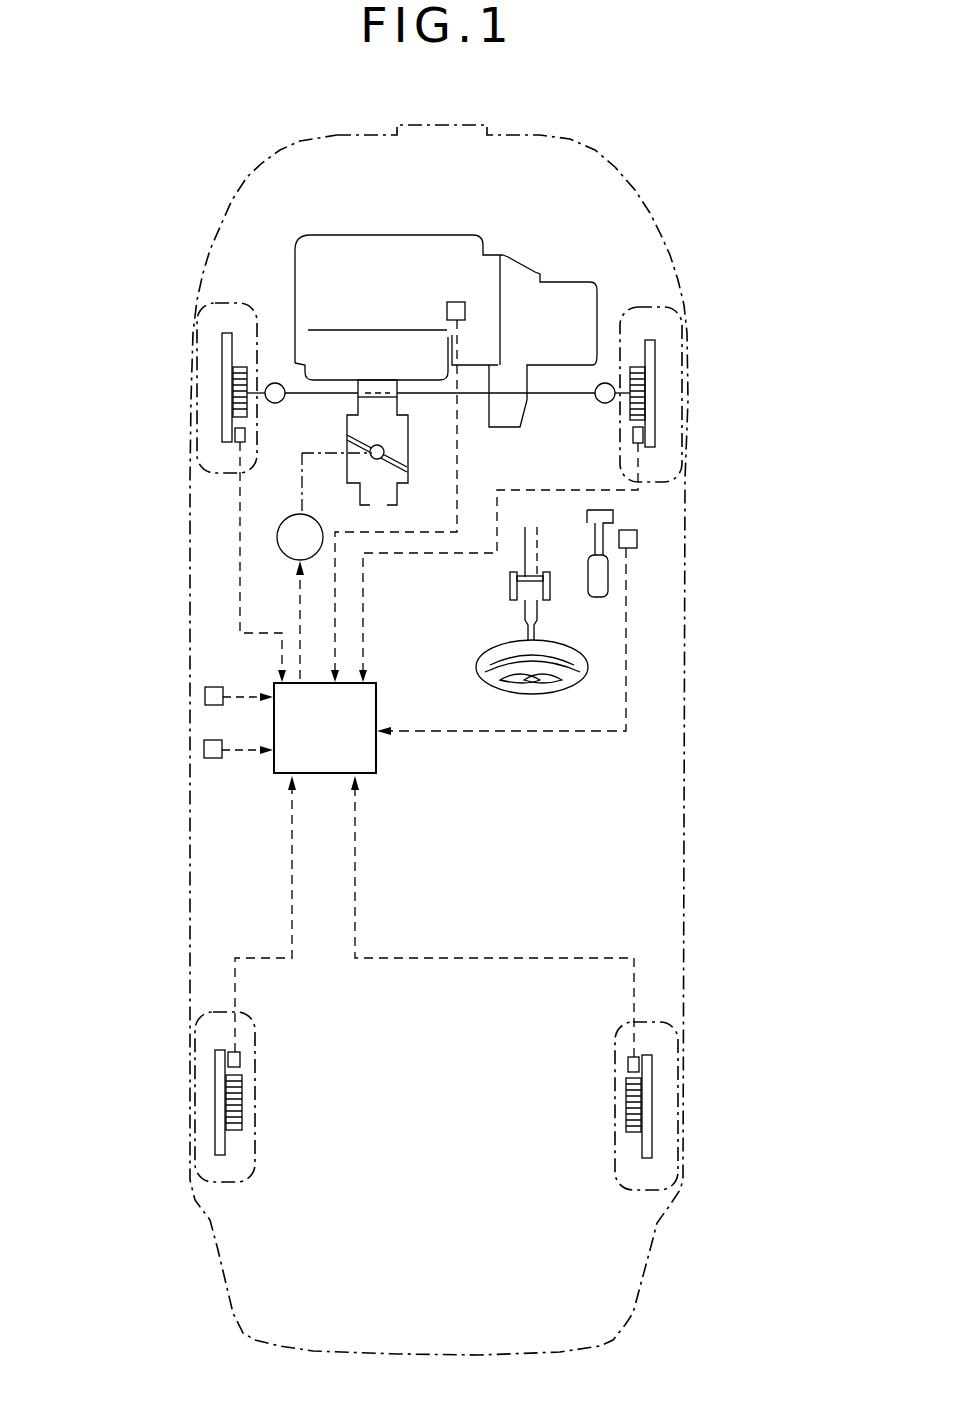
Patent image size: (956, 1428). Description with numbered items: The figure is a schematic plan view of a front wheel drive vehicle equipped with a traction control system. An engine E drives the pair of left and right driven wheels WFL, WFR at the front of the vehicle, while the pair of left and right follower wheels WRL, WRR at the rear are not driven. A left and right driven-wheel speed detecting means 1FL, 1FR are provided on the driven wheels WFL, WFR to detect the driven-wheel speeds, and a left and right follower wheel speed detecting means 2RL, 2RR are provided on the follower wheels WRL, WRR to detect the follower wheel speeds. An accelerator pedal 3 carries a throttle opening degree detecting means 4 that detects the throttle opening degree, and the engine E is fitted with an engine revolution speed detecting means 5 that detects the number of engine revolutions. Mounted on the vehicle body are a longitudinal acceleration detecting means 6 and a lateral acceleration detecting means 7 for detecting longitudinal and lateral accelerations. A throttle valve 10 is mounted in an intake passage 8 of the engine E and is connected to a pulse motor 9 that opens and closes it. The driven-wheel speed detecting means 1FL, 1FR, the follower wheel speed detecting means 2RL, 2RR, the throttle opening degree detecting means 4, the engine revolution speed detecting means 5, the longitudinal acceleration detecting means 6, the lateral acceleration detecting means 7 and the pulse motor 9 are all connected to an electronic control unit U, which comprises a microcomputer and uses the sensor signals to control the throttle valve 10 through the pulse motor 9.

The engine E is at (380, 230).
The engine revolution speed detecting means 5 is at (457, 300).
The intake passage 8 is at (395, 495).
The throttle valve 10 is at (400, 445).
The pulse motor 9 is at (293, 516).
The electronic control unit U is at (334, 744).
The longitudinal acceleration detecting means 6 is at (215, 687).
The lateral acceleration detecting means 7 is at (214, 758).
The accelerator pedal 3 is at (588, 560).
The throttle opening degree detecting means 4 is at (638, 536).
The left driven wheel WFL is at (180, 348).
The right driven wheel WFR is at (687, 397).
The left follower wheel WRL is at (180, 1078).
The right follower wheel WRR is at (678, 1078).
The left driven-wheel speed detecting means 1FL is at (240, 445).
The right driven-wheel speed detecting means 1FR is at (633, 436).
The left follower wheel speed detecting means 2RL is at (243, 1060).
The right follower wheel speed detecting means 2RR is at (630, 1062).